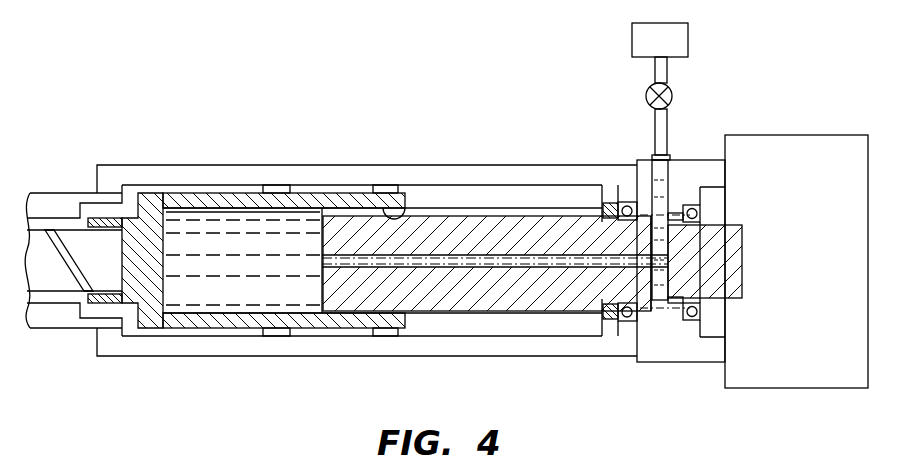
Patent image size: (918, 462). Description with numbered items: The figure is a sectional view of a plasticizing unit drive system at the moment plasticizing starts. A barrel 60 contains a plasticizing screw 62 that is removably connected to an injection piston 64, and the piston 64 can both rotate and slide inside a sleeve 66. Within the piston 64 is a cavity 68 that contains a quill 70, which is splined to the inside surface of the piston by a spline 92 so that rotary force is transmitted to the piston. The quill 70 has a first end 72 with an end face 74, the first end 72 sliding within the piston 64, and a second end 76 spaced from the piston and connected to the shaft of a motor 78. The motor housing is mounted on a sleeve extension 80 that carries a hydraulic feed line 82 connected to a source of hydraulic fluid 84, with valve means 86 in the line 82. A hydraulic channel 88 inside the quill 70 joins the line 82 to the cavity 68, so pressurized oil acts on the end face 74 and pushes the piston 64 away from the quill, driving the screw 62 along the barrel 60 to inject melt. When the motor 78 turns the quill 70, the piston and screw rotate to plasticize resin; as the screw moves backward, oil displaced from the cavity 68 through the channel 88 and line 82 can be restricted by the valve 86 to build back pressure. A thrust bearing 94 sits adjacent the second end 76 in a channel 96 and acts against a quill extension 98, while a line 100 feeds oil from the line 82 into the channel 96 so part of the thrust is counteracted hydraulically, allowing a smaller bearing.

The barrel 60 is at (48, 200).
The plasticizing screw 62 is at (48, 280).
The injection piston 64 is at (153, 203).
The sleeve 66 is at (367, 176).
The cavity 68 is at (255, 222).
The quill 70 is at (443, 228).
The first end 72 is at (336, 216).
The end face 74 is at (316, 298).
The second end 76 is at (620, 243).
The motor 78 is at (795, 152).
The sleeve extension 80 is at (683, 168).
The hydraulic feed line 82 is at (657, 120).
The source of hydraulic fluid 84 is at (640, 42).
The valve means 86 is at (671, 96).
The hydraulic channel 88 is at (513, 256).
The spline 92 is at (405, 208).
The thrust bearing 94 is at (628, 322).
The channel 96 is at (635, 299).
The quill extension 98 is at (612, 322).
The line 100 is at (663, 285).